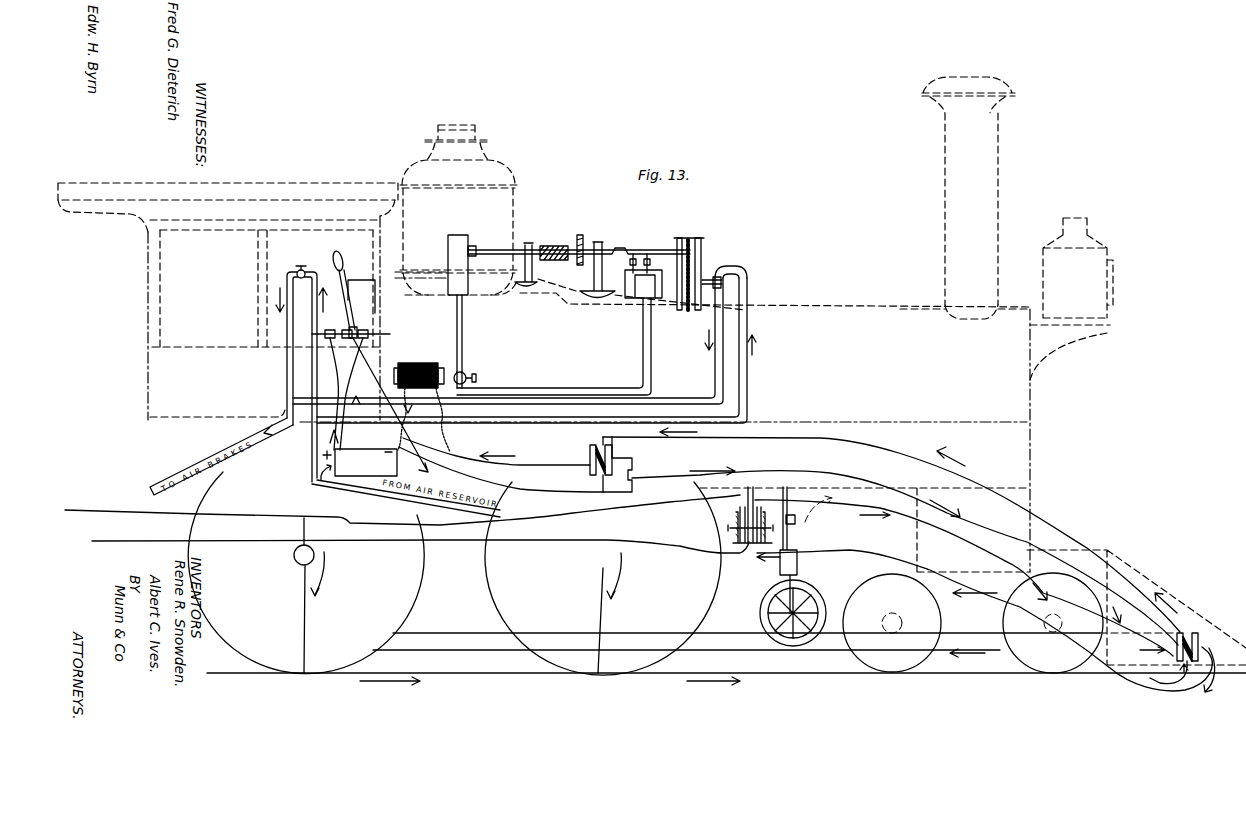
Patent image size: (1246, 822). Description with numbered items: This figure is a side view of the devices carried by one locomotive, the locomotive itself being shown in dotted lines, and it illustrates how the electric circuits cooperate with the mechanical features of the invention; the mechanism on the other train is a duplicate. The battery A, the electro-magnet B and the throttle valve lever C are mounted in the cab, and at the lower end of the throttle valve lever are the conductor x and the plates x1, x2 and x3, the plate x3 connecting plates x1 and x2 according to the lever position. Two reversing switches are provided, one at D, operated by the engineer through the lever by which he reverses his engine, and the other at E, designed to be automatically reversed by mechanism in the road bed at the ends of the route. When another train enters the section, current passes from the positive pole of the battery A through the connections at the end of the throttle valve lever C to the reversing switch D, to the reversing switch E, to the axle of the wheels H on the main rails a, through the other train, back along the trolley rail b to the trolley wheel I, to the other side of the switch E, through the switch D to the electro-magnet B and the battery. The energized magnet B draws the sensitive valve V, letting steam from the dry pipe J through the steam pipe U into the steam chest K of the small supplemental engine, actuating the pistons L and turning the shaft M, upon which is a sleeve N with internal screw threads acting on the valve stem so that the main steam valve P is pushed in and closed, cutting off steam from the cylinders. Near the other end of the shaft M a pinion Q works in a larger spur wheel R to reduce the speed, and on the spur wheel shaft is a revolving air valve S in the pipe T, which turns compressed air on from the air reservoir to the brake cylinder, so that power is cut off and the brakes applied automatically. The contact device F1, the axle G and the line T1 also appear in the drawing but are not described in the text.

The battery A is at (360, 454).
The electro-magnet B is at (422, 397).
The throttle valve lever C is at (353, 290).
The reversing switch D is at (619, 464).
The reversing switch E is at (1183, 662).
The contact device F1 is at (751, 515).
The axle G is at (302, 541).
The car wheels H is at (643, 284).
The trolley wheel I is at (798, 566).
The dry pipe J is at (448, 263).
The steam chest K is at (419, 588).
The pistons L is at (664, 262).
The shaft M is at (620, 246).
The sleeve N is at (560, 246).
The main steam valve P is at (476, 250).
The pinion Q is at (524, 255).
The spur wheel R is at (688, 306).
The air valve S is at (712, 277).
The pipe T is at (741, 291).
The train pipe T1 is at (384, 496).
The steam pipe U is at (463, 329).
The sensitive valve V is at (470, 375).
The conductor x is at (378, 333).
The contact plate x1 is at (346, 330).
The contact plate x2 is at (316, 332).
The contact plate x3 is at (355, 329).
The main track rails a is at (470, 633).
The trolley rail b is at (686, 644).